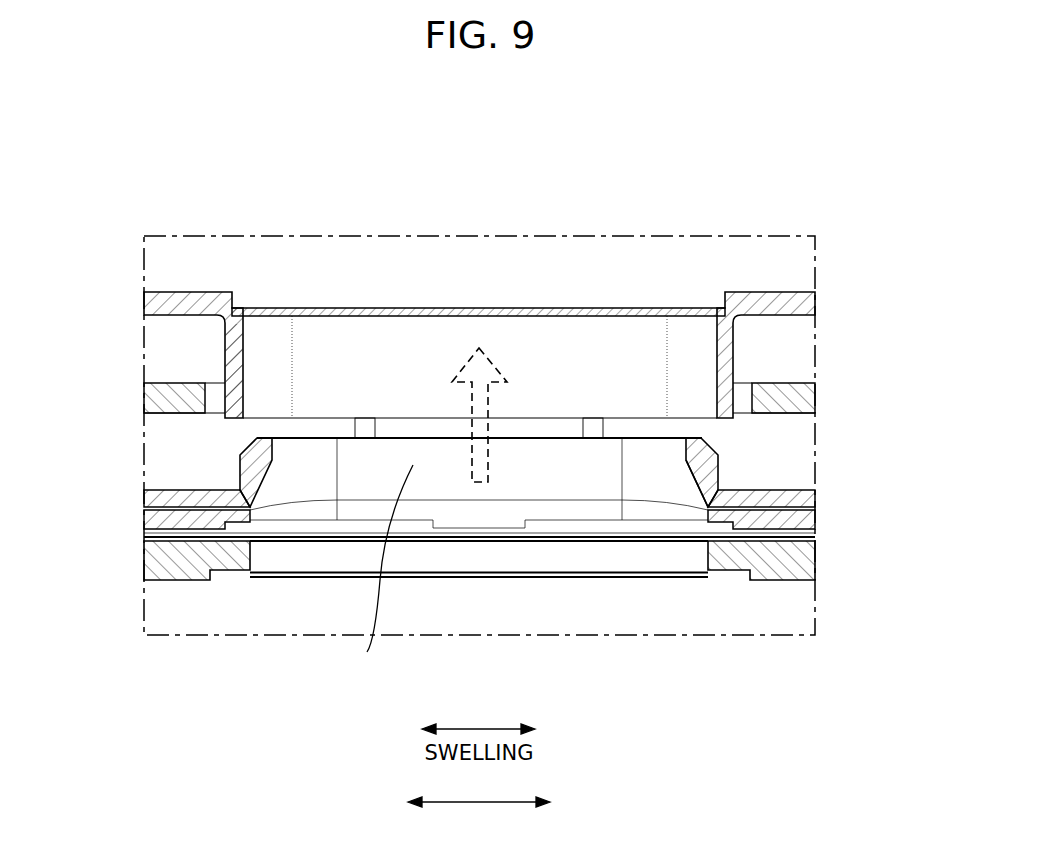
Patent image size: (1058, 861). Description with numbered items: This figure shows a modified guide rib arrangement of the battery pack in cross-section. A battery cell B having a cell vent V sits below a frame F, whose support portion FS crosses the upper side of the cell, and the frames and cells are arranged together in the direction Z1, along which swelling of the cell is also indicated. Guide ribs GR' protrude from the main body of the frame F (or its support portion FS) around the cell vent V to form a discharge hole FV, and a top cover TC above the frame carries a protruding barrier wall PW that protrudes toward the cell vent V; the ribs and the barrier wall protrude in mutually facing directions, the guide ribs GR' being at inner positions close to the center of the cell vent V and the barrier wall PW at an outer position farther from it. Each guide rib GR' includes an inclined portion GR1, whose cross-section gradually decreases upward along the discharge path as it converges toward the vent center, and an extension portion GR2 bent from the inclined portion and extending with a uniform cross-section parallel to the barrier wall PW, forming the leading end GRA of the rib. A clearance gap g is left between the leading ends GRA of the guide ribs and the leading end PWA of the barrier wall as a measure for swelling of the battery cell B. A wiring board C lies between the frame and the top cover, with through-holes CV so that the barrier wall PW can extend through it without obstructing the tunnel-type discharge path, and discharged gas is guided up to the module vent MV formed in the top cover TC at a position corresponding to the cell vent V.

The top cover TC is at (152, 303).
The protruding barrier wall PW is at (730, 358).
The module vent MV is at (513, 308).
The clearance gap g is at (698, 420).
The wiring board C is at (150, 398).
The through-hole CV is at (216, 395).
The leading end of the protruding barrier wall PWA is at (232, 437).
The leading end of the guide rib GRA is at (255, 438).
The extension portion GR2 is at (702, 445).
The inclined portion GR1 is at (712, 478).
The guide rib GR' is at (922, 456).
The frame F is at (425, 507).
The support portion FS is at (150, 497).
The cell vent V is at (480, 528).
The discharge hole FV is at (380, 574).
The battery cell B is at (150, 562).
The direction Z1 is at (479, 814).